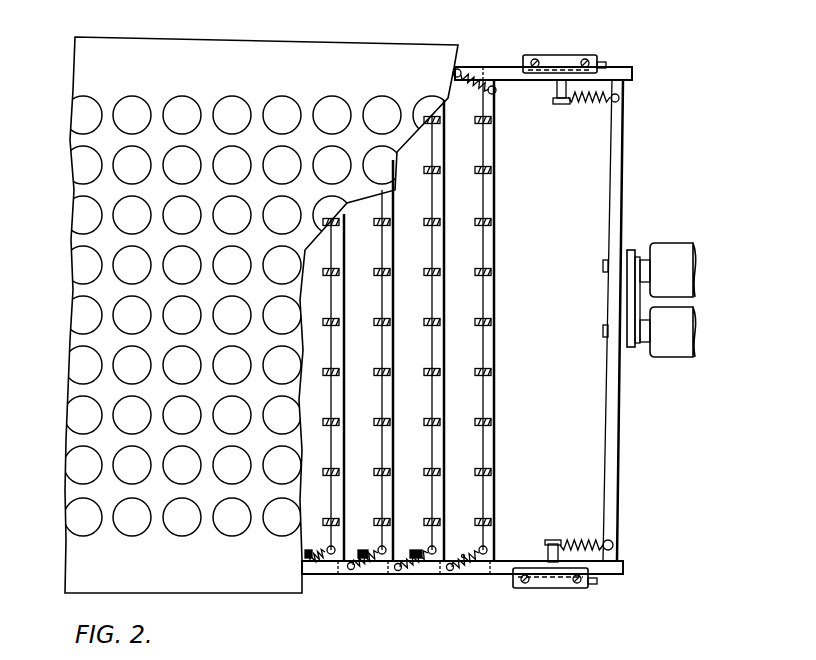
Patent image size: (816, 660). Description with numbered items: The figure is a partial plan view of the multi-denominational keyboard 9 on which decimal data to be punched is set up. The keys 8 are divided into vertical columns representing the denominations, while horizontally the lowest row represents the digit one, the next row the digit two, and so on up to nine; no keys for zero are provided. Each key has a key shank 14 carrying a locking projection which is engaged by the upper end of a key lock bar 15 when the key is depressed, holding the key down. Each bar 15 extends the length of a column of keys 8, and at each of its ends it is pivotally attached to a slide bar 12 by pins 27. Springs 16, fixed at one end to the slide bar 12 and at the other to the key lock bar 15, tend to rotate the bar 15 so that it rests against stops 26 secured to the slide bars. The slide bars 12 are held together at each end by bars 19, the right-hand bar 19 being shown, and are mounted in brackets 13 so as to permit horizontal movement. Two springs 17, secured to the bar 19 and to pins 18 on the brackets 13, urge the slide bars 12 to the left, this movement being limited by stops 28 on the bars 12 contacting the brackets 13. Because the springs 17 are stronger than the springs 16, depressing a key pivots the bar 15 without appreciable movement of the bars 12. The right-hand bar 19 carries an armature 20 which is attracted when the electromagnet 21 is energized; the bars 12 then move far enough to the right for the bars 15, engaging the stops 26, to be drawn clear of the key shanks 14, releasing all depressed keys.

The key 8 is at (330, 102).
The multi-denominational keyboard 9 is at (163, 580).
The slide bar 12 is at (510, 72).
The bracket 13 is at (568, 57).
The key shank 14 is at (475, 223).
The key lock bar 15 is at (393, 297).
The spring 16 is at (420, 565).
The spring 17 is at (578, 544).
The pin 18 is at (552, 540).
The bar 19 is at (612, 442).
The armature 20 is at (636, 252).
The electro-magnet 21 is at (662, 348).
The stop 26 is at (462, 554).
The pin 27 is at (414, 578).
The stop 28 is at (606, 63).